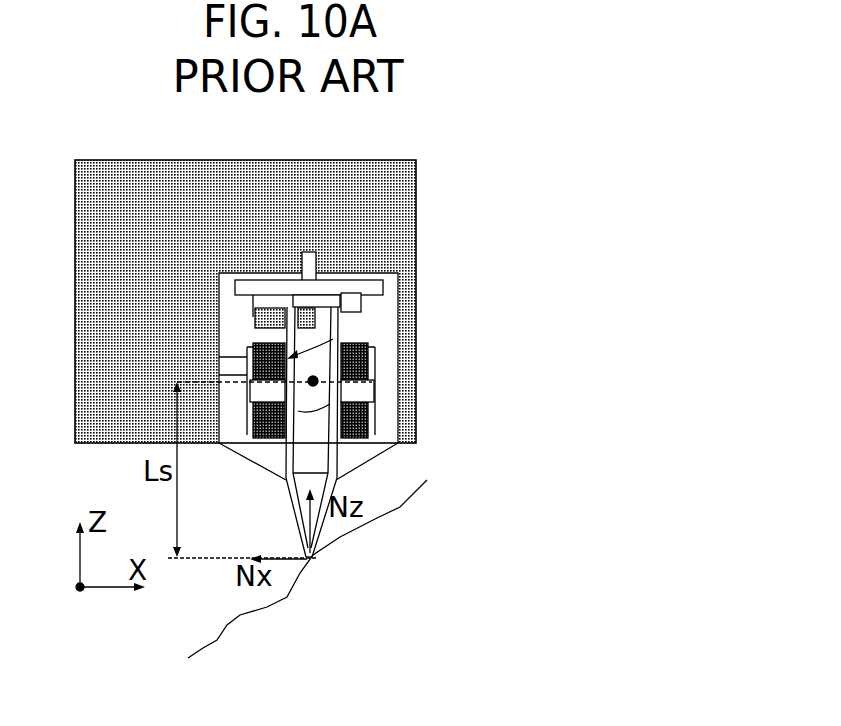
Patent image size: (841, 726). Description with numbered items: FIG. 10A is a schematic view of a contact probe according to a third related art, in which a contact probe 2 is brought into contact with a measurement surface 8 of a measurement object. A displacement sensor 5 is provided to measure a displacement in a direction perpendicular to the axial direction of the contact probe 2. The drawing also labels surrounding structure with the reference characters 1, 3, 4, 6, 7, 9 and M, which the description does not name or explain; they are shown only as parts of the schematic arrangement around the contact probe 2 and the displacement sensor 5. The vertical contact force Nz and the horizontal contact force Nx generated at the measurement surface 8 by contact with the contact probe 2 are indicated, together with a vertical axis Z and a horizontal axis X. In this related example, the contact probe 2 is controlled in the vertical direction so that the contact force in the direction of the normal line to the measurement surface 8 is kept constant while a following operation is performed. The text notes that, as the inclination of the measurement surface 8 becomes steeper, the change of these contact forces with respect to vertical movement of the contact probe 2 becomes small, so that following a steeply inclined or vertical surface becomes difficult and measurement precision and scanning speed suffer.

The stylus tip 1 is at (298, 553).
The contact probe 2 is at (318, 464).
The holder frame 3 is at (400, 297).
The support plate 4 is at (258, 280).
The displacement sensor 5 is at (255, 321).
The shaft 6 is at (308, 251).
The magnet unit 7 is at (247, 347).
The measurement surface 8 is at (380, 520).
The housing 9 is at (412, 200).
The pivot / rotation moment M is at (333, 339).